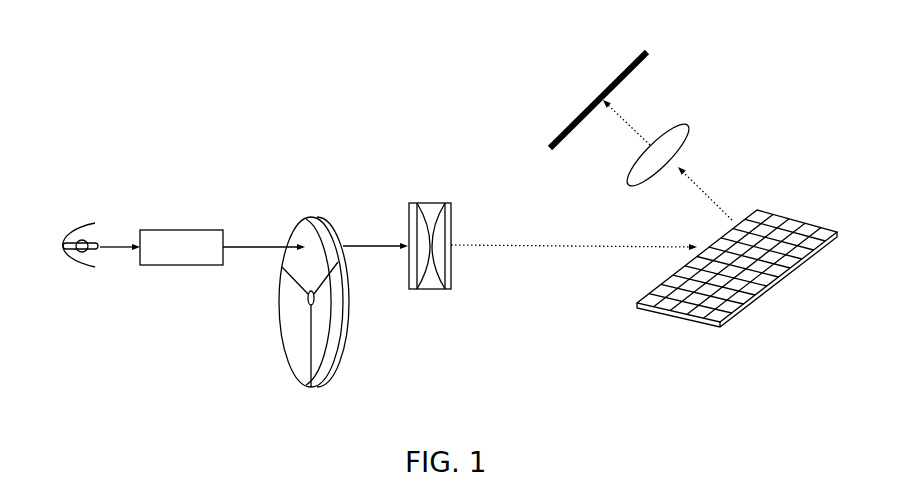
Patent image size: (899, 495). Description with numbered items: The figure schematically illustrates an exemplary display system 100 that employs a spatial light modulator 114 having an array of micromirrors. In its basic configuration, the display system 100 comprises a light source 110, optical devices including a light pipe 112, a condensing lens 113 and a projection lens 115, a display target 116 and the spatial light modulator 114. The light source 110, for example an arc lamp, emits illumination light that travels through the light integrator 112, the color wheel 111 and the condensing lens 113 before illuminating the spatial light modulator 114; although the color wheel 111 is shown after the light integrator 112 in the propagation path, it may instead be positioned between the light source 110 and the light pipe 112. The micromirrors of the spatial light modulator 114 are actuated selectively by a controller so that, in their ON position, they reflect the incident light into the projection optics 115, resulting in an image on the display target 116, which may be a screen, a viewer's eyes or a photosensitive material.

The display system 100 is at (320, 130).
The light source 110 is at (73, 215).
The color wheel 111 is at (318, 217).
The light pipe 112 is at (183, 229).
The condensing lens 113 is at (430, 202).
The spatial light modulator 114 is at (772, 207).
The projection lens 115 is at (683, 120).
The display target 116 is at (622, 53).